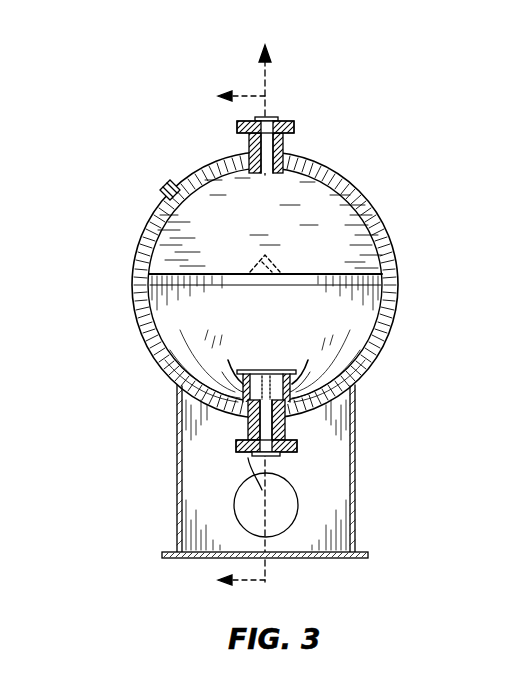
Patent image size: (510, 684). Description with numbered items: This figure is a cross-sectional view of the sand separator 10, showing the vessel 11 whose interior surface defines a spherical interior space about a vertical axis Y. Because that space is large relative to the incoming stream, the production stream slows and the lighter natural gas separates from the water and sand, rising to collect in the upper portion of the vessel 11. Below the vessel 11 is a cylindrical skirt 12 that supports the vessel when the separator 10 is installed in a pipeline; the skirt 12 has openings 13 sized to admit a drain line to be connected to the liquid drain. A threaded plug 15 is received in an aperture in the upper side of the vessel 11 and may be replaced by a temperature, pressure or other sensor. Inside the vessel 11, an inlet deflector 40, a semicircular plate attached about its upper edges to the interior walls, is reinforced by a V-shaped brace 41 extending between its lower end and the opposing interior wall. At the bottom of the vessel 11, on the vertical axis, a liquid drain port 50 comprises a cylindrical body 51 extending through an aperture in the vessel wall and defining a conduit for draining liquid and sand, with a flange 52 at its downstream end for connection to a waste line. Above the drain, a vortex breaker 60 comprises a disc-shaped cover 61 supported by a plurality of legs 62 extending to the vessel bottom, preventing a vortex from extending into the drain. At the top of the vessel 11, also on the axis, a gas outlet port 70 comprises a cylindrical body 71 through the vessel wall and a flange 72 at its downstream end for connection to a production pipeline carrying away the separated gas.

The sand separator 10 is at (122, 340).
The vessel 11 is at (390, 218).
The cylindrical skirt 12 is at (335, 513).
The openings 13 is at (236, 505).
The threaded plug 15 is at (166, 186).
The inlet deflector 40 is at (247, 218).
The V-shaped brace 41 is at (280, 262).
The liquid drain port 50 is at (300, 447).
The cylindrical body 51 is at (247, 423).
The flange 52 is at (266, 497).
The vortex breaker 60 is at (298, 393).
The disc-shaped cover 61 is at (275, 378).
The legs 62 is at (242, 380).
The gas outlet port 70 is at (259, 115).
The cylindrical body 71 is at (284, 140).
The flange 72 is at (290, 120).